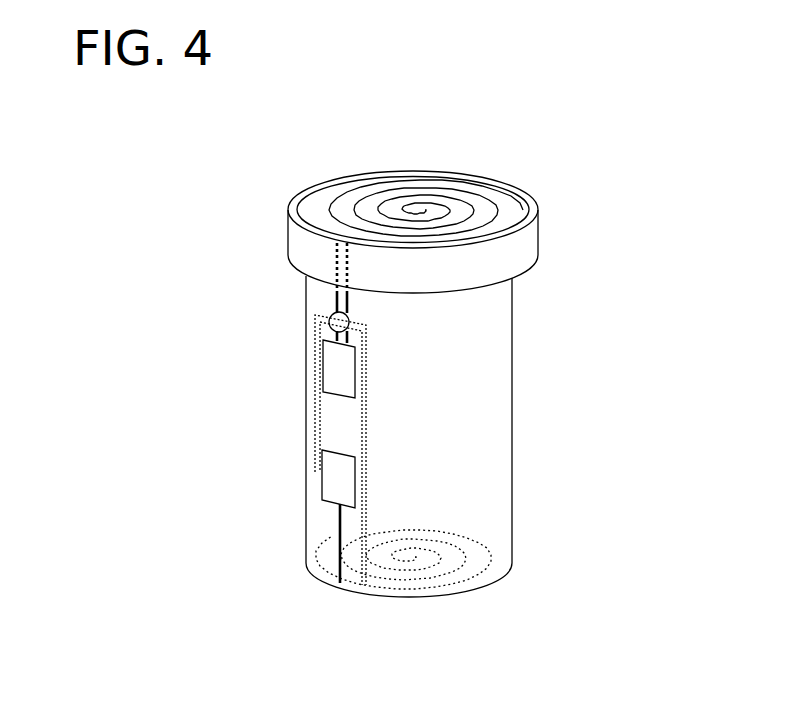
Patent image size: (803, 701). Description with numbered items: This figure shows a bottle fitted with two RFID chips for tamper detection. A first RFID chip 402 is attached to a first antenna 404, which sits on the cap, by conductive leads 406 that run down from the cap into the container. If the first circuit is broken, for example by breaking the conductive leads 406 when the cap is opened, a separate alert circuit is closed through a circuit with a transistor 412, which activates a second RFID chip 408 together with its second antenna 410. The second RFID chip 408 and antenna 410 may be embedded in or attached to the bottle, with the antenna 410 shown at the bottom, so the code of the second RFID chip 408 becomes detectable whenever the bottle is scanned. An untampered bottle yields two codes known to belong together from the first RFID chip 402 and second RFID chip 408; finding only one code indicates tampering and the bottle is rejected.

The first antenna 404 is at (320, 183).
The conductive leads 406 is at (333, 302).
The circuit with a transistor 412 is at (330, 318).
The first RFID chip 402 is at (342, 373).
The second RFID chip 408 is at (333, 467).
The second antenna 410 is at (313, 557).